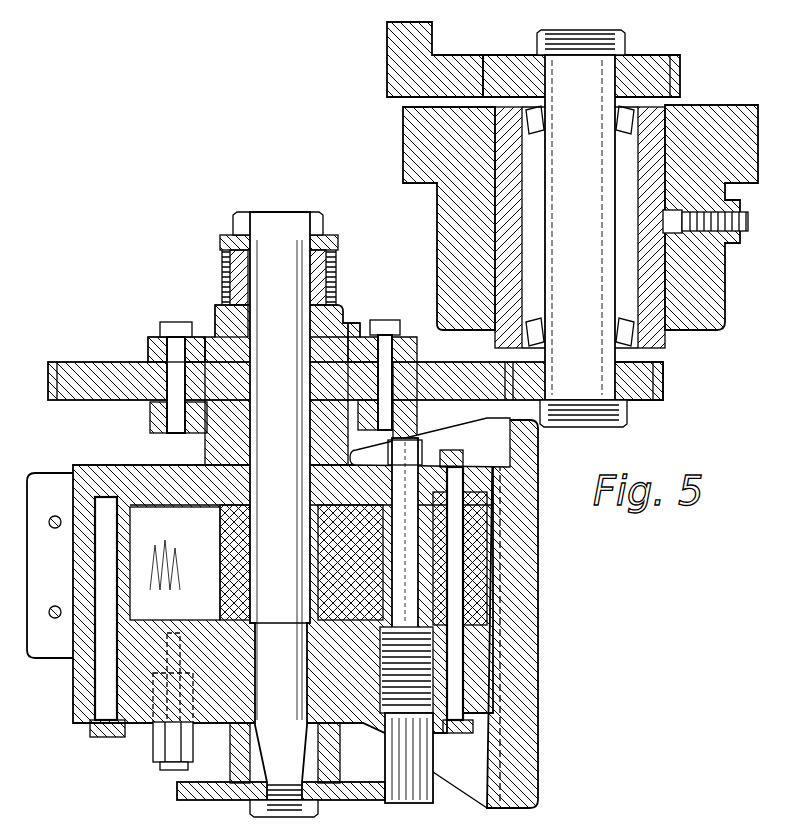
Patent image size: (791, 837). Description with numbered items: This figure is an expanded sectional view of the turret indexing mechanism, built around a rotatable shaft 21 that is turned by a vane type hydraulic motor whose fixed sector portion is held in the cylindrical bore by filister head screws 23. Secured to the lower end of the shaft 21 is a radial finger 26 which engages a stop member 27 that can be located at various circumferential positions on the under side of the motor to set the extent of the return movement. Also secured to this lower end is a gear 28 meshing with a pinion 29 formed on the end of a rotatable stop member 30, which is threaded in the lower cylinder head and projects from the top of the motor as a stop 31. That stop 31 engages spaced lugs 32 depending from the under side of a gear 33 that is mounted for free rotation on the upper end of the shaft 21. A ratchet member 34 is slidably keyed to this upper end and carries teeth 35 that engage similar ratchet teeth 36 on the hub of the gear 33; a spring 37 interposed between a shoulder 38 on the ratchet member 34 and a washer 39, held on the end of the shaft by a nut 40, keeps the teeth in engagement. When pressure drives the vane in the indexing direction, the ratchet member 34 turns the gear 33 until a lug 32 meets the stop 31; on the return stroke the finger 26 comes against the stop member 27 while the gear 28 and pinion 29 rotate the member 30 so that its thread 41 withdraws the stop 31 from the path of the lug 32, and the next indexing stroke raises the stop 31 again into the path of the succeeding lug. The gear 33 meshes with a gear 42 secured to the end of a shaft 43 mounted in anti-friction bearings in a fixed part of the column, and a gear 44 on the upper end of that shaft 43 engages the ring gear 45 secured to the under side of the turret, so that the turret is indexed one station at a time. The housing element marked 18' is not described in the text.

The housing 18' is at (282, 571).
The rotatable shaft 21 is at (265, 457).
The filister head screws 23 is at (300, 822).
The radial finger 26 is at (213, 763).
The stop member 27 is at (152, 732).
The gear 28 is at (366, 800).
The pinion 29 is at (434, 802).
The rotatable stop member 30 is at (410, 571).
The stop 31 is at (422, 449).
The lugs 32 is at (418, 431).
The gear 33 is at (443, 368).
The ratchet member 34 is at (338, 264).
The teeth 35 is at (222, 322).
The ratchet teeth 36 is at (240, 338).
The spring 37 is at (332, 284).
The shoulder 38 is at (345, 306).
The washer 39 is at (336, 240).
The nut 40 is at (318, 215).
The thread 41 is at (432, 734).
The gear 42 is at (665, 382).
The shaft 43 is at (603, 200).
The gear 44 is at (660, 58).
The ring gear 45 is at (446, 62).